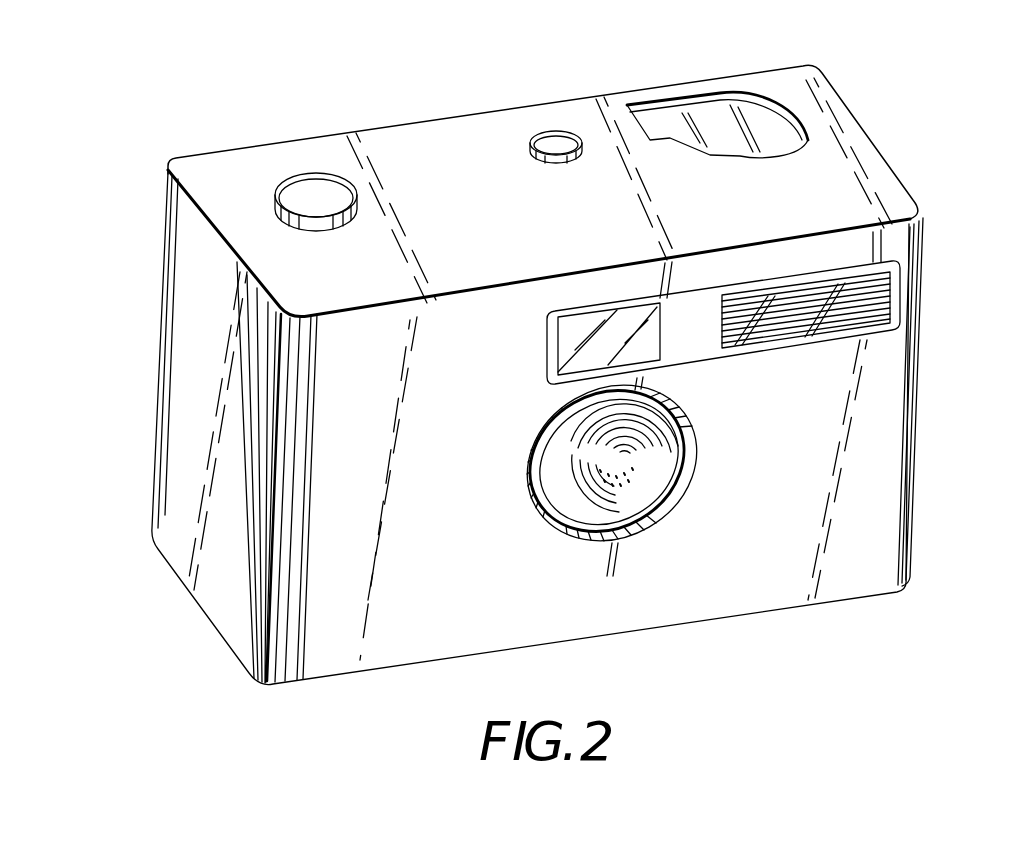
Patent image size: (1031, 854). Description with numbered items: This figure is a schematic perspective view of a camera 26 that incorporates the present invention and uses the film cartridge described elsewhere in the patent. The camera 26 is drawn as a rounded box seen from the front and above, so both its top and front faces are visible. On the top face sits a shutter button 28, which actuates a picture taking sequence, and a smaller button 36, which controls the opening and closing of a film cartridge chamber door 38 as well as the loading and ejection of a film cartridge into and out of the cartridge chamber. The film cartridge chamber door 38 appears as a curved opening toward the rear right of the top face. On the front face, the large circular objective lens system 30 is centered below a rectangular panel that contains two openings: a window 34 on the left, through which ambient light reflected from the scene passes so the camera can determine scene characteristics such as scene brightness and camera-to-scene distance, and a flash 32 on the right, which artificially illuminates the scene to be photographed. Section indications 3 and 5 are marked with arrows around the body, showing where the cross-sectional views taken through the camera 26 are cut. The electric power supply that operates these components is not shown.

The section line 3- 3 is at (208, 268).
The section line 5- 5 is at (605, 107).
The camera 26 is at (173, 609).
The shutter button 28 is at (315, 188).
The objective lens system 30 is at (645, 463).
The flash 32 is at (873, 297).
The window 34 is at (570, 347).
The button 36 is at (557, 136).
The film cartridge chamber door 38 is at (718, 115).